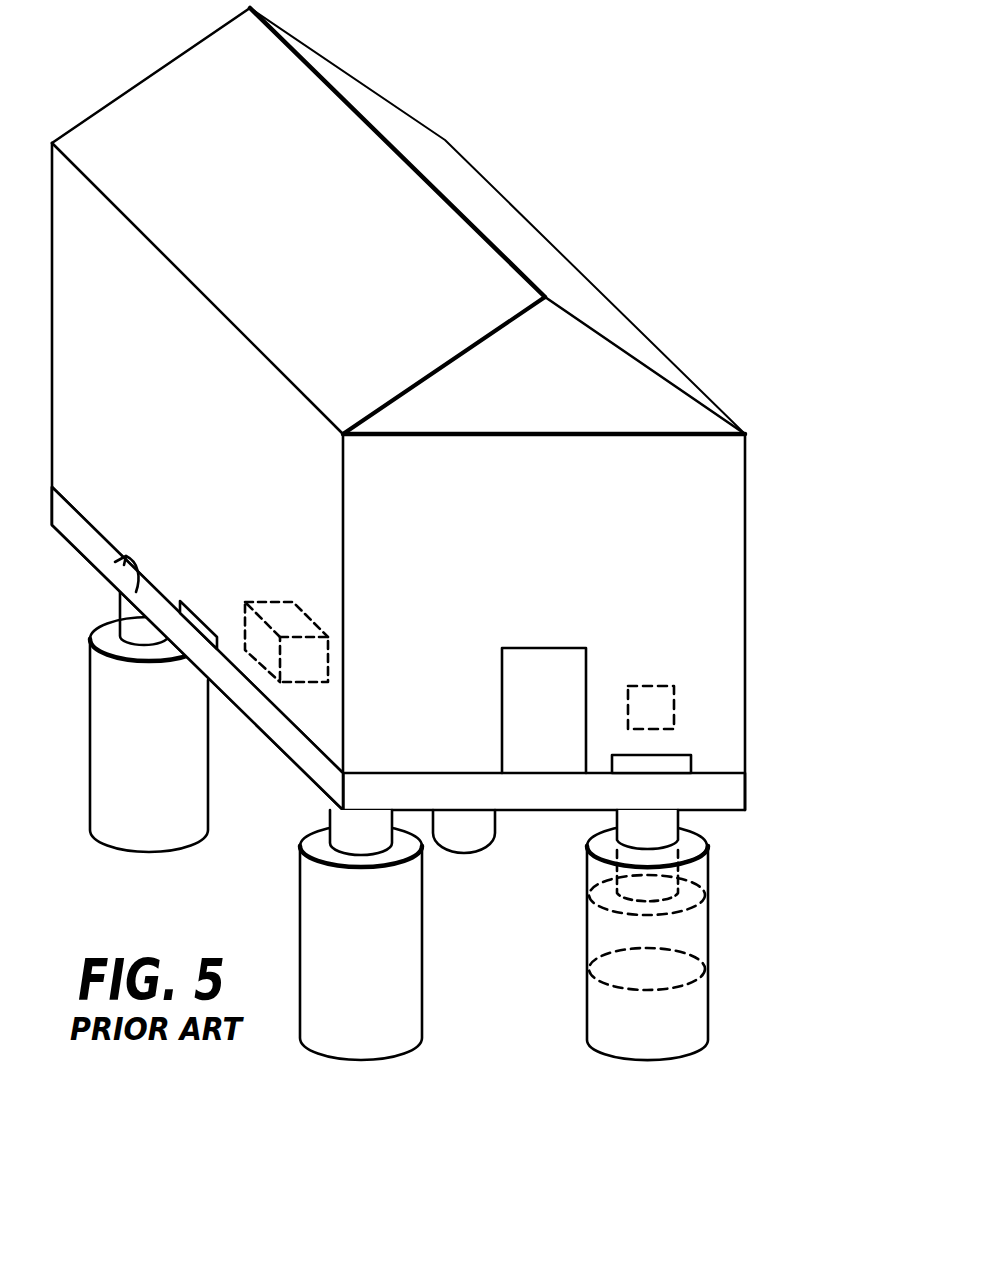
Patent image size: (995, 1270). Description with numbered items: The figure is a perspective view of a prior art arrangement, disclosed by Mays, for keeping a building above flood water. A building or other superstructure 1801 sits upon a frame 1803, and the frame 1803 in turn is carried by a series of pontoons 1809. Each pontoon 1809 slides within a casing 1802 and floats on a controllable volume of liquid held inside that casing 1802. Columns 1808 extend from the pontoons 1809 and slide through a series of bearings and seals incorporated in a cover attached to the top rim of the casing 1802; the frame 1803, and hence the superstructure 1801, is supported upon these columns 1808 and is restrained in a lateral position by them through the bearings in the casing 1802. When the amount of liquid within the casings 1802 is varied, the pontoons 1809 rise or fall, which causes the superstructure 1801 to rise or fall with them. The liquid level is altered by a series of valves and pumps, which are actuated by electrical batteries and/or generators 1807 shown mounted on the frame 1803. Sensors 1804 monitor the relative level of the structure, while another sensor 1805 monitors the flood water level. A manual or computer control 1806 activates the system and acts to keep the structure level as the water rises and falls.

The building or other superstructure 1801 is at (602, 380).
The casing 1802 is at (717, 961).
The frame 1803 is at (722, 792).
The sensors 1804 is at (198, 598).
The sensor 1805 is at (137, 587).
The manual or computer control 1806 is at (652, 685).
The electrical batteries and/or generators 1807 is at (288, 600).
The columns 1808 is at (668, 832).
The pontoons 1809 is at (690, 931).